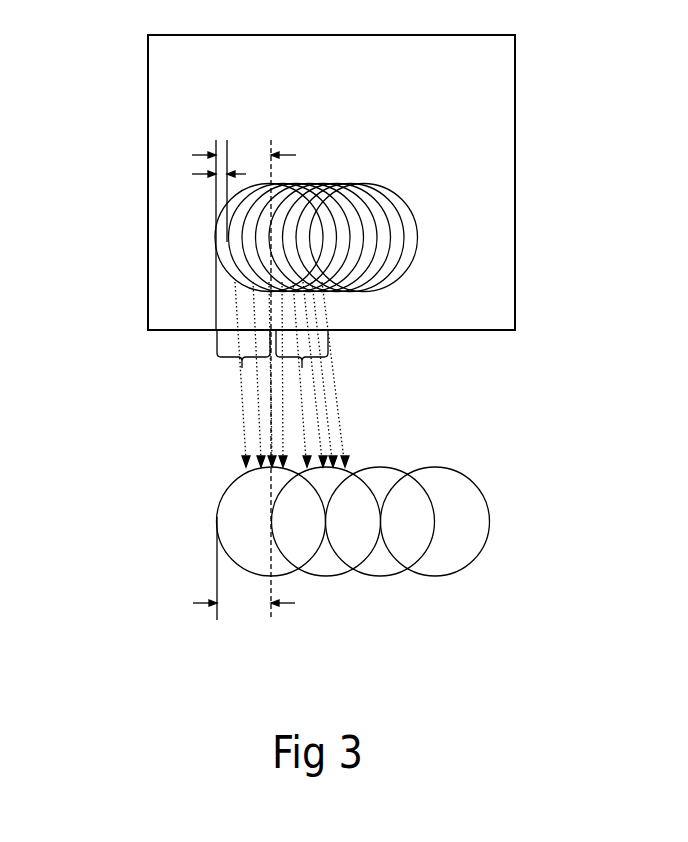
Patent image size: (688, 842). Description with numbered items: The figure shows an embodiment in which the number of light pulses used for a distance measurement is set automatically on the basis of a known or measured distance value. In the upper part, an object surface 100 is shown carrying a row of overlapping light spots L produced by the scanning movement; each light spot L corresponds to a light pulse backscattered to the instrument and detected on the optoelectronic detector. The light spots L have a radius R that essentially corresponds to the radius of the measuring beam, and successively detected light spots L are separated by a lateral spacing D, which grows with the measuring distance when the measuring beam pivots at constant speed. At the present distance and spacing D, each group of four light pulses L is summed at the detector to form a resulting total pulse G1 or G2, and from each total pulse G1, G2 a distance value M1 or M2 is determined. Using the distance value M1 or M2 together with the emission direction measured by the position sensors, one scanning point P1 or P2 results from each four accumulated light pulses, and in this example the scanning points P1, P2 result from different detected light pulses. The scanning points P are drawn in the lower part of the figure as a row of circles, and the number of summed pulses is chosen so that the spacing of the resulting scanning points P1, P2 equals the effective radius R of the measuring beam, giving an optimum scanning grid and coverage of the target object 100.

The object surface 100 is at (507, 321).
The light spots L is at (331, 204).
The spacing D is at (307, 380).
The radius R is at (318, 354).
The total pulse G1 is at (230, 352).
The total pulse G2 is at (308, 343).
The scanning points P is at (284, 506).
The distance value M1 is at (247, 522).
The scanning point P1 is at (195, 521).
The distance value M2 is at (364, 546).
The scanning point P2 is at (364, 546).